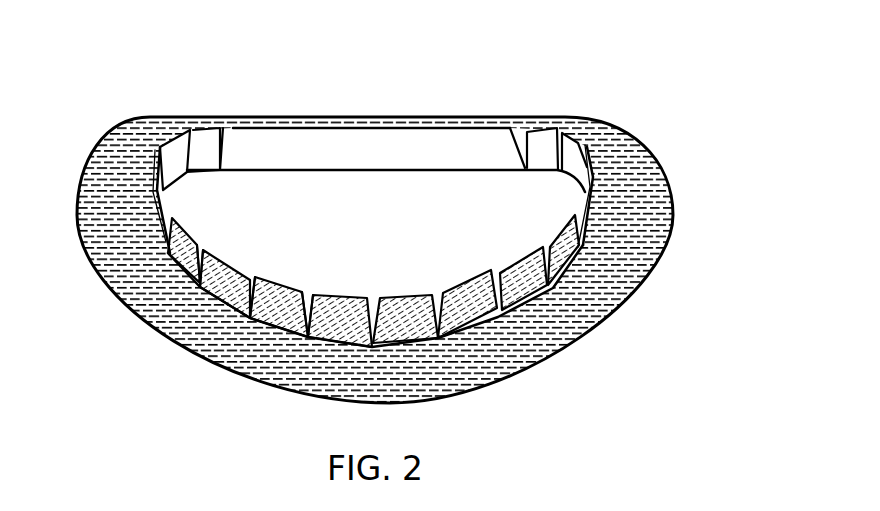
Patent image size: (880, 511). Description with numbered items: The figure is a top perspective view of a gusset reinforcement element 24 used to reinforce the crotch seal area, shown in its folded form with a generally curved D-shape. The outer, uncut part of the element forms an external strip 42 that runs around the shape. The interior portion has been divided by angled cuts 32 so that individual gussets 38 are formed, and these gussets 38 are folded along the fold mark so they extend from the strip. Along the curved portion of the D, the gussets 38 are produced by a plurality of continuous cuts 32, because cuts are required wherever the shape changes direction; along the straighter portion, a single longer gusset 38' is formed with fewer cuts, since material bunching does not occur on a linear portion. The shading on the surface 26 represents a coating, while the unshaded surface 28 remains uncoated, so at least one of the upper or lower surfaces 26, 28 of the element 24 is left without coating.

The gusset reinforcement element 24 is at (137, 97).
The upper surface 26 is at (130, 276).
The lower surface 28 is at (369, 140).
The cuts 32 is at (313, 292).
The gussets 38 is at (373, 329).
The gusset 38' is at (386, 162).
The external strip 42 is at (243, 360).